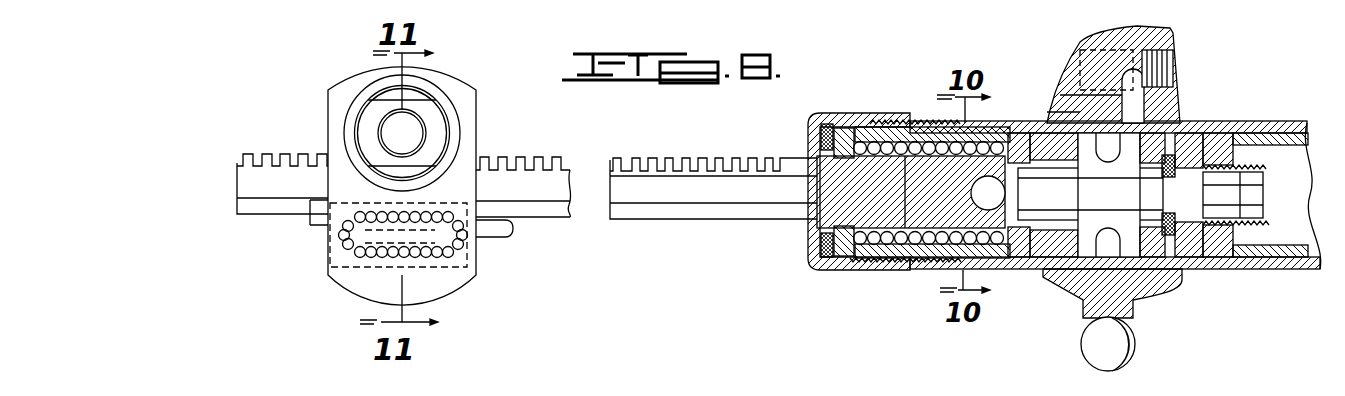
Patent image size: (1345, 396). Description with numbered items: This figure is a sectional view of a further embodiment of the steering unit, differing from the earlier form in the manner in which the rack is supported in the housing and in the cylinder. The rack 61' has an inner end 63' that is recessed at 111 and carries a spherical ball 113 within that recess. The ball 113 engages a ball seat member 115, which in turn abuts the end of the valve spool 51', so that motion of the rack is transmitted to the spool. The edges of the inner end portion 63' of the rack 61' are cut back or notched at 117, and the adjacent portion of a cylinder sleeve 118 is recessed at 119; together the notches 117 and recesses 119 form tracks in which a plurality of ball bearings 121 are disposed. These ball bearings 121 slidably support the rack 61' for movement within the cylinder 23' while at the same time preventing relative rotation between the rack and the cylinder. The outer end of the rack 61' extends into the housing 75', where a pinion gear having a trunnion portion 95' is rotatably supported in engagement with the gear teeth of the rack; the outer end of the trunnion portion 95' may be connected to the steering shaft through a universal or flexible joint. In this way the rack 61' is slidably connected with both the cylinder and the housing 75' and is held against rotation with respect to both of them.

The trunnion portion 95' is at (345, 133).
The housing 75' is at (420, 186).
The rack 61' is at (527, 216).
The ball bearings 121 is at (872, 140).
The inner end of the rack 63' is at (932, 173).
The recesses in cylinder sleeve 119 is at (921, 140).
The cylinder sleeve 118 is at (989, 122).
The cylinder 23' is at (951, 184).
The ball seat member 115 is at (1053, 90).
The notches 117 is at (908, 162).
The spherical ball 113 is at (973, 186).
The recess 111 is at (950, 165).
The valve spool 51' is at (1098, 296).